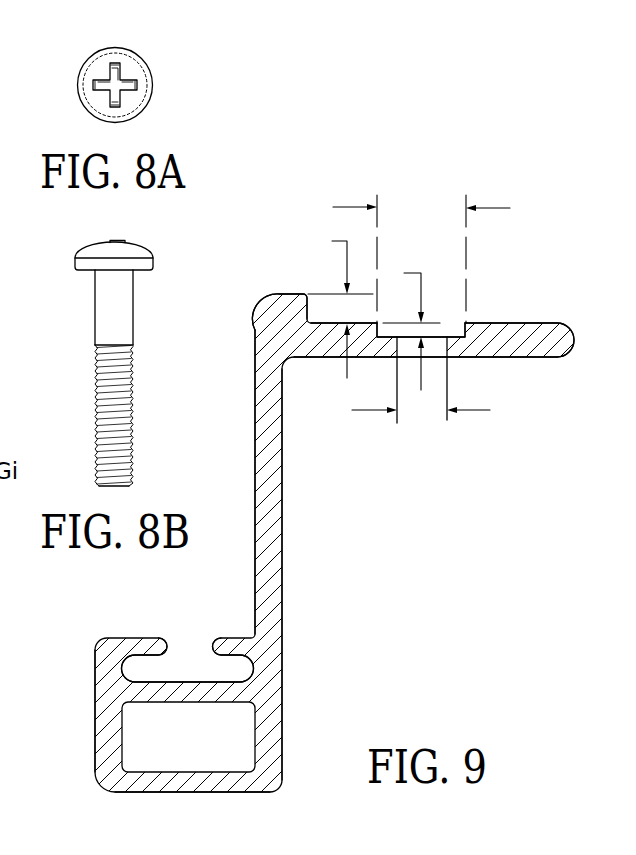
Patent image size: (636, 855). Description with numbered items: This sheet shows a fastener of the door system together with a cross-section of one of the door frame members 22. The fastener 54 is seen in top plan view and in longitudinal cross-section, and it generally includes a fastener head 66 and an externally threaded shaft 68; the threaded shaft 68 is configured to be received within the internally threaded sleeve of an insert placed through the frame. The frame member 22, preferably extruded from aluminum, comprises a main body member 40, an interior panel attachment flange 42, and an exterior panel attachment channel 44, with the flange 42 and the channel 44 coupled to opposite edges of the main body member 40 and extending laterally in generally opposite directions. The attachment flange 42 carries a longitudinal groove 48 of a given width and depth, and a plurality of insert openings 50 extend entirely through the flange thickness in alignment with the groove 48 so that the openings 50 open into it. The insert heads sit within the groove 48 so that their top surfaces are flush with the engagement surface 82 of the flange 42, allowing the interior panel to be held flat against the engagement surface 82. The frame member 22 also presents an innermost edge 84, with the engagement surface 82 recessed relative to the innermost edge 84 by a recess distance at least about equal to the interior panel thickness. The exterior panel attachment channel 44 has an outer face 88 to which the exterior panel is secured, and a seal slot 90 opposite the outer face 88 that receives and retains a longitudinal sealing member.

In FIG. 9, the frame member 22 is at (310, 520).
In FIG. 9, the main body member 40 is at (282, 492).
In FIG. 9, the interior panel attachment flange 42 is at (437, 346).
In FIG. 9, the exterior panel attachment channel 44 is at (95, 714).
In FIG. 9, the longitudinal groove 48 is at (445, 313).
In FIG. 9, the insert opening 50 is at (430, 368).
In FIG. 8A, the fastener 54 is at (165, 96).
In FIG. 8B, the fastener 54 is at (113, 355).
In FIG. 8A, the fastener head 66 is at (136, 68).
In FIG. 8B, the fastener head 66 is at (85, 254).
In FIG. 8B, the externally threaded shaft 68 is at (133, 410).
In FIG. 9, the engagement surface 82 is at (535, 323).
In FIG. 9, the innermost edge 84 is at (308, 308).
In FIG. 9, the outer face 88 is at (188, 792).
In FIG. 9, the seal slot 90 is at (186, 644).